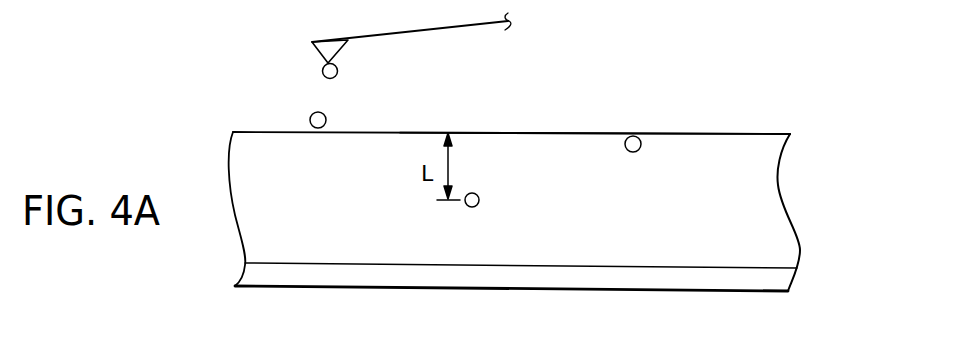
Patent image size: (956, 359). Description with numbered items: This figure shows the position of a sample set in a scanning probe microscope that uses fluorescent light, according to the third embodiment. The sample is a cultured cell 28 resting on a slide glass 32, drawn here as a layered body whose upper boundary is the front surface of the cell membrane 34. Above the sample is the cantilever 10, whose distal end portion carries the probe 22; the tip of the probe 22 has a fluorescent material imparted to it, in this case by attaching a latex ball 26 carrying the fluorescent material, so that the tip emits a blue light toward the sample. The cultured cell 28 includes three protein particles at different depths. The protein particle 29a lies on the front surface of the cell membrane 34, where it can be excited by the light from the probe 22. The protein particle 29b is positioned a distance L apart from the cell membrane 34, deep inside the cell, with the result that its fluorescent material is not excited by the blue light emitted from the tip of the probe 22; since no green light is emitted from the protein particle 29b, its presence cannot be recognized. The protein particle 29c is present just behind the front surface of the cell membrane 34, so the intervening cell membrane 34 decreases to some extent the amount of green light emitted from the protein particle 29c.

The cantilever 10 is at (470, 27).
The probe 22 is at (346, 47).
The latex ball 26 is at (338, 74).
The cultured cell 28 is at (759, 112).
The protein particle 29a is at (311, 118).
The protein particle 29b is at (480, 202).
The protein particle 29c is at (638, 152).
The slide glass 32 is at (745, 293).
The cell membrane 34 is at (687, 133).